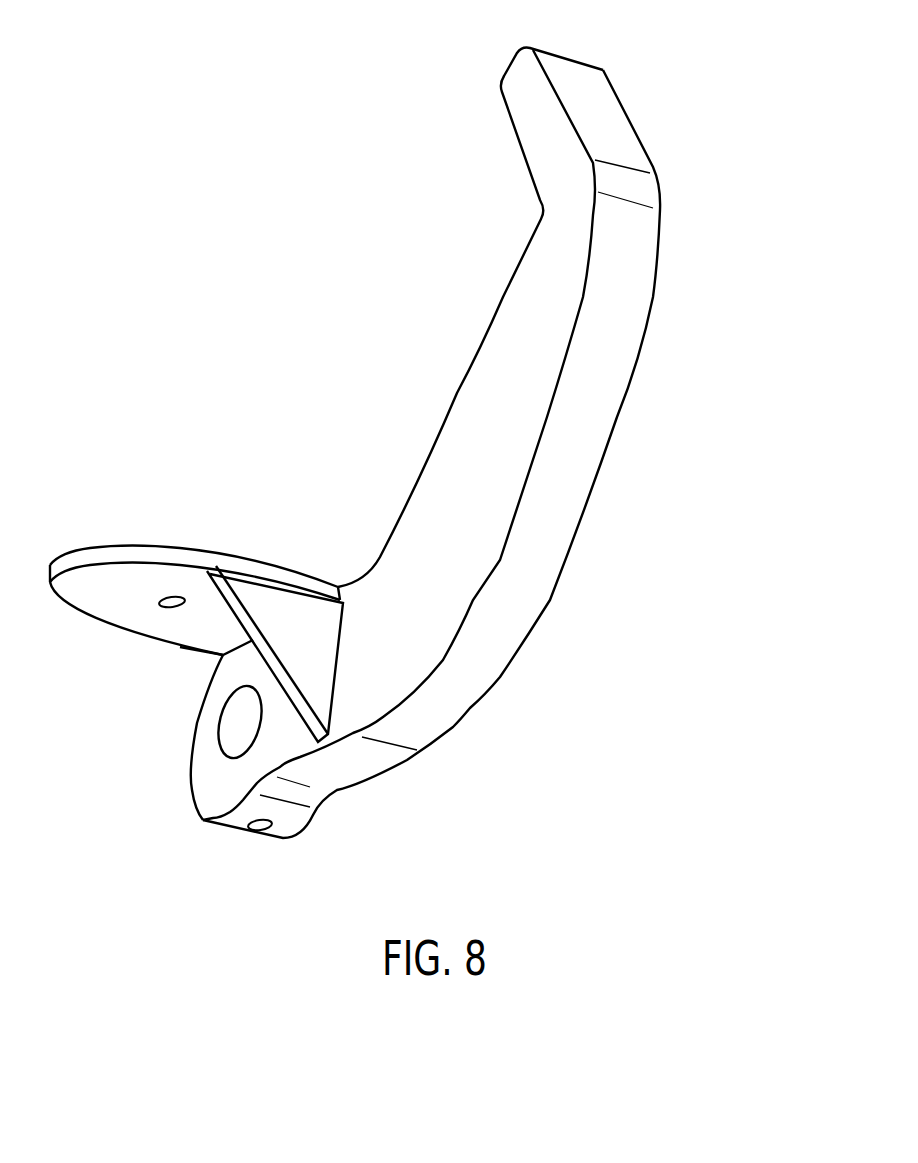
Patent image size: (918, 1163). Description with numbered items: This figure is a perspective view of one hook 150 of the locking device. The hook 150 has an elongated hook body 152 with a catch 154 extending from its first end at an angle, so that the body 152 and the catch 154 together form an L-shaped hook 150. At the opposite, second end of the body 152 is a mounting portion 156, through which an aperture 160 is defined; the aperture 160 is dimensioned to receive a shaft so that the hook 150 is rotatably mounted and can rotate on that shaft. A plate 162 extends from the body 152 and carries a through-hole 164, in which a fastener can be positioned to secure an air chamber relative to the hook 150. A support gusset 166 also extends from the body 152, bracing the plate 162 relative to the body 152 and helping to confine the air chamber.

The hook 150 is at (712, 82).
The hook body 152 is at (473, 407).
The catch 154 is at (603, 108).
The mounting portion 156 is at (392, 804).
The aperture 160 is at (223, 740).
The plate 162 is at (125, 568).
The through-hole 164 is at (167, 608).
The support gusset 166 is at (280, 595).